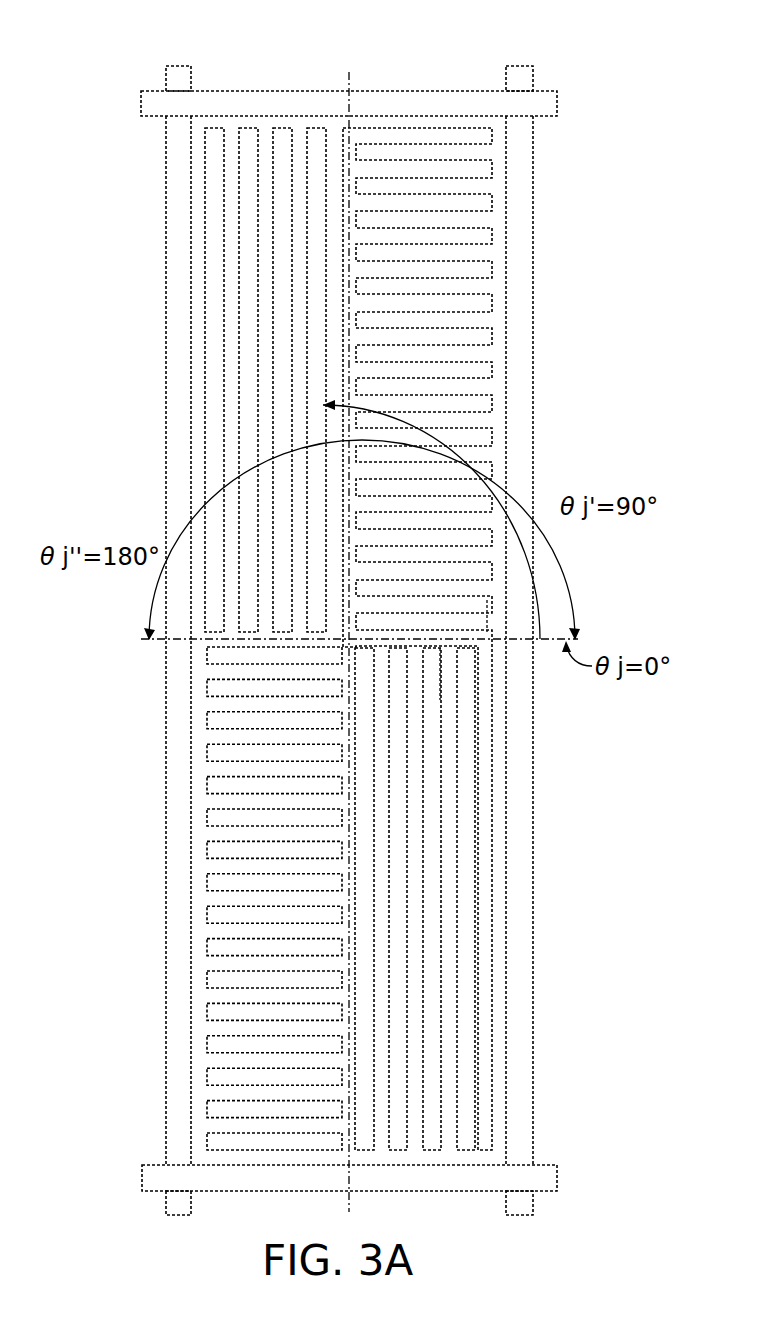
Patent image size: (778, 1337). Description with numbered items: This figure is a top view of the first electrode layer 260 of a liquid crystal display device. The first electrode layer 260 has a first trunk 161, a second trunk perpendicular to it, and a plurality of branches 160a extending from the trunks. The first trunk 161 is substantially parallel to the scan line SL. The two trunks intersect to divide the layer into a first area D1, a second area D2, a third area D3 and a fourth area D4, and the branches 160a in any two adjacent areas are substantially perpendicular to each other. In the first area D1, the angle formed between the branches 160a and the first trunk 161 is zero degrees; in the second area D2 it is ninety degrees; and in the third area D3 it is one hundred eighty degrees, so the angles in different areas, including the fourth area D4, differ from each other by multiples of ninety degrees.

The scan line SL is at (150, 106).
The first area D1 is at (421, 122).
The second area D2 is at (234, 122).
The third area D3 is at (206, 889).
The fourth area D4 is at (500, 889).
The first electrode layer 260 is at (345, 122).
The branches 160a is at (487, 632).
The first trunk 161 is at (440, 650).